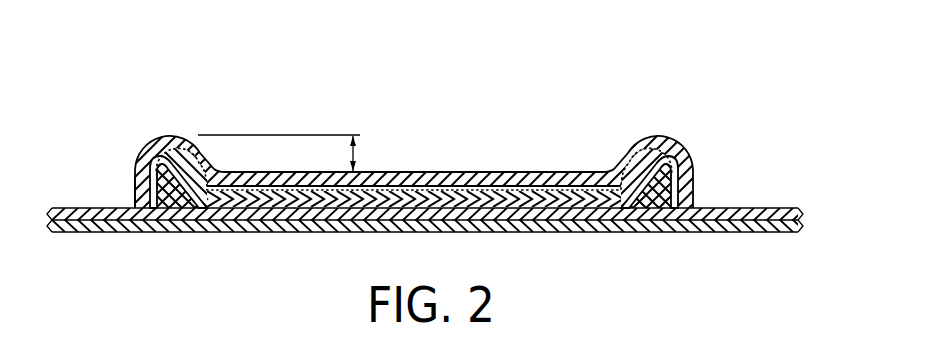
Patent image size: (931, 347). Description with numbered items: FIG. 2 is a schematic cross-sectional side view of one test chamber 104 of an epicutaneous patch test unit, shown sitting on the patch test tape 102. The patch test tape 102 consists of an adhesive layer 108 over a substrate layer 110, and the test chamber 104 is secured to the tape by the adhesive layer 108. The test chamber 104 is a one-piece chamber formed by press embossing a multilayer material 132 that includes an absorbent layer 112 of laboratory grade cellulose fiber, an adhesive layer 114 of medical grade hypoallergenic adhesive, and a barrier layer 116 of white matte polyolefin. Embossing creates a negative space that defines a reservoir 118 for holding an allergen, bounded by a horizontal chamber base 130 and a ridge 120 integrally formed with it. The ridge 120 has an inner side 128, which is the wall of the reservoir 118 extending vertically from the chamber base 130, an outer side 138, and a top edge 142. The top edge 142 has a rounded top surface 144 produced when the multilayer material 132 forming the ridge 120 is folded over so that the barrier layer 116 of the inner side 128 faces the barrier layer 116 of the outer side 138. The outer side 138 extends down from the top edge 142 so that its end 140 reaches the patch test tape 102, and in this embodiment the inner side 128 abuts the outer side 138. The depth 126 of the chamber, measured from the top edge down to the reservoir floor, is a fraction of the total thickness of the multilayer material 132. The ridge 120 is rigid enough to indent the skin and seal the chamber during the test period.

The patch test tape 102 is at (733, 207).
The test chamber 104 is at (582, 59).
The adhesive layer 108 is at (775, 207).
The substrate layer 110 is at (748, 234).
The absorbent layer 112 is at (258, 184).
The adhesive layer 114 is at (308, 184).
The barrier layer 116 is at (452, 192).
The reservoir 118 is at (514, 151).
The ridge 120 is at (670, 135).
The depth 126 is at (358, 150).
The inner side 128 is at (129, 184).
The chamber base 130 is at (556, 180).
The multilayer material 132 is at (136, 190).
The outer side 138 is at (133, 205).
The end 140 is at (138, 205).
The top edge 142 is at (643, 135).
The rounded top surface 144 is at (654, 137).